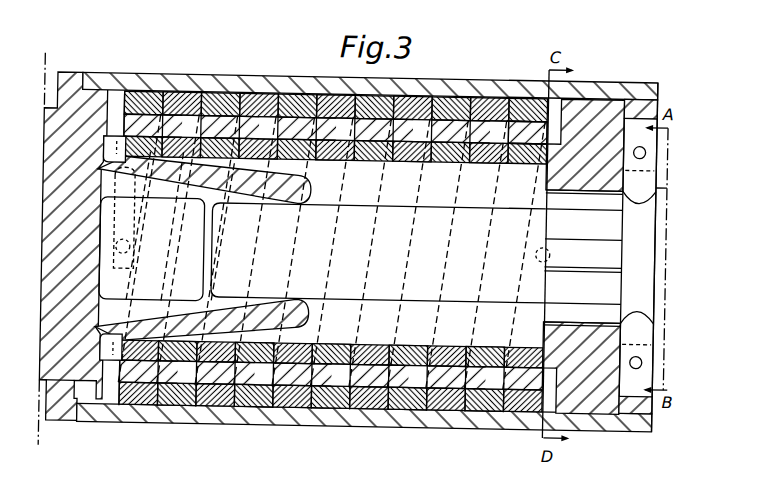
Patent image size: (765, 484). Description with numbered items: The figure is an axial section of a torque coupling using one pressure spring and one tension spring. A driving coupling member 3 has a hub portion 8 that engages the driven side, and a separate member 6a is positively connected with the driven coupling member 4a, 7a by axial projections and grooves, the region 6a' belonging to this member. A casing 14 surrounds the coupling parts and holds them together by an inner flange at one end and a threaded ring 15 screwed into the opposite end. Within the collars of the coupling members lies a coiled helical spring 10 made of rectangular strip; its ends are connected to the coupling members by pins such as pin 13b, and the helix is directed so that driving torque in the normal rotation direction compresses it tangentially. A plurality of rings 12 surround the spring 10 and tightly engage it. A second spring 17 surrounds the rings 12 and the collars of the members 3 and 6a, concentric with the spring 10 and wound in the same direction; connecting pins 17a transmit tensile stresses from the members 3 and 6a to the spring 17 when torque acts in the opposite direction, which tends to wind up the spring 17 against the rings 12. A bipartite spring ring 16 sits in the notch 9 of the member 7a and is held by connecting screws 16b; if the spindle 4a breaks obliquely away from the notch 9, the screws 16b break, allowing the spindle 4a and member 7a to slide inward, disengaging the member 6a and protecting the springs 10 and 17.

The coupling member 3 is at (145, 121).
The separate member 6a is at (584, 217).
The piston body portion 6a' is at (524, 96).
The bipartite spring ring 16 is at (633, 134).
The connecting screws 16b is at (648, 142).
The spindle 4a is at (664, 188).
The pin 13b is at (553, 245).
The notch 9 is at (645, 314).
The threaded ring 15 is at (639, 408).
The casing 14 is at (374, 412).
The driven coupling member 7a is at (322, 273).
The rings 12 is at (271, 370).
The helical spring 10 is at (225, 348).
The second spring 17 is at (186, 394).
The hub portion 8 is at (145, 316).
The connecting pins 17a is at (133, 245).